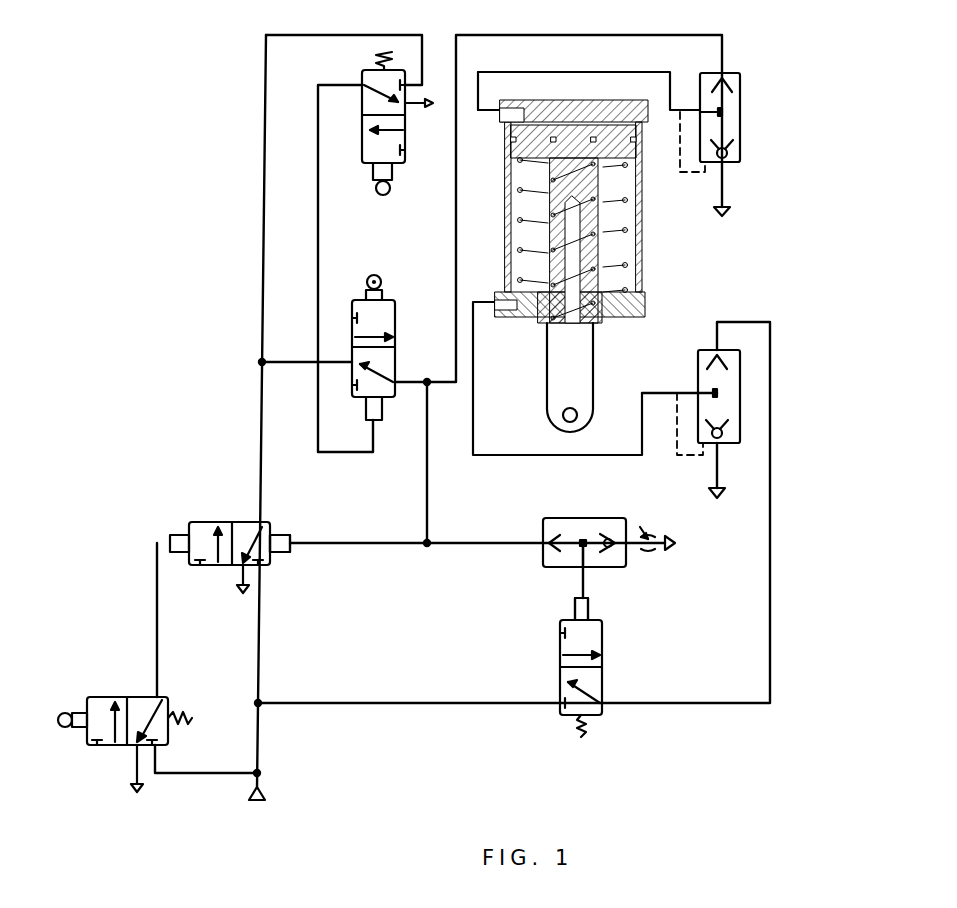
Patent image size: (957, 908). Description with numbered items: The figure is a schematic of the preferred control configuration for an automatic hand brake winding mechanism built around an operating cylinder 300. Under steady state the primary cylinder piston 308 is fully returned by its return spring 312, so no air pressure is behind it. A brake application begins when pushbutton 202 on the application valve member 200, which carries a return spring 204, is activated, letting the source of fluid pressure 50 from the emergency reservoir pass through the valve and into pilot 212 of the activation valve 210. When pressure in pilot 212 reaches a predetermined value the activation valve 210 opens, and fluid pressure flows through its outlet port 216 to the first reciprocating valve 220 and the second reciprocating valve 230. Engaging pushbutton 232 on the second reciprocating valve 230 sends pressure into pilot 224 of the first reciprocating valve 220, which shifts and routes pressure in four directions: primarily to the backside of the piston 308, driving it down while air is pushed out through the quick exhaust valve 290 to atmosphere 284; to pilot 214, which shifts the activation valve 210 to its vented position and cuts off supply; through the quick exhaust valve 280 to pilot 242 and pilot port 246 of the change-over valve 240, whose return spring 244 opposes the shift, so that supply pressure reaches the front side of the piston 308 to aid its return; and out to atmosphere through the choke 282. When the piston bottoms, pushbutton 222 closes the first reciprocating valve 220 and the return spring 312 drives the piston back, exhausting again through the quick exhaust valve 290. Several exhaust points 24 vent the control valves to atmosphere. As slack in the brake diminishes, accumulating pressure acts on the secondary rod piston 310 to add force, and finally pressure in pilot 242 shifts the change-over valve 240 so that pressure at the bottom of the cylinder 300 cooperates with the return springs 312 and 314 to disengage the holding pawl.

The exhaust to atmosphere 24 is at (238, 591).
The source of fluid pressure 50 is at (263, 800).
The application valve member 200 is at (142, 697).
The pushbutton 202 is at (65, 712).
The return spring 204 is at (185, 712).
The activation valve 210 is at (245, 522).
The pilot 212 is at (175, 535).
The pilot 214 is at (282, 535).
The outlet port 216 is at (282, 555).
The first reciprocating valve 220 is at (392, 400).
The pushbutton 222 is at (370, 276).
The pilot 224 is at (366, 412).
The second reciprocating valve 230 is at (362, 75).
The pushbutton 232 is at (386, 196).
The change-over valve 240 is at (560, 645).
The pilot 242 is at (590, 604).
The return spring 244 is at (583, 737).
The pilot port 246 is at (575, 605).
The quick exhaust valve 280 is at (603, 518).
The choke 282 is at (647, 536).
The atmosphere 284 is at (735, 207).
The quick exhaust valve 290 is at (742, 88).
The operating cylinder 300 is at (640, 178).
The primary cylinder piston 308 is at (572, 135).
The secondary rod piston 310 is at (617, 135).
The return spring 312 is at (598, 218).
The return spring 314 is at (615, 262).